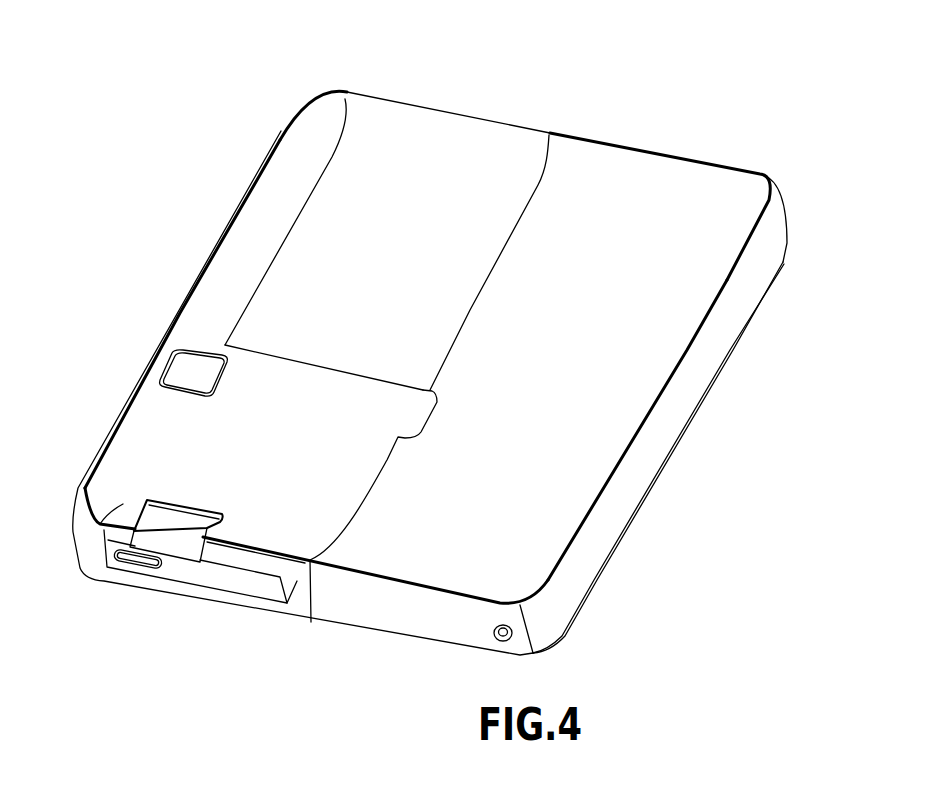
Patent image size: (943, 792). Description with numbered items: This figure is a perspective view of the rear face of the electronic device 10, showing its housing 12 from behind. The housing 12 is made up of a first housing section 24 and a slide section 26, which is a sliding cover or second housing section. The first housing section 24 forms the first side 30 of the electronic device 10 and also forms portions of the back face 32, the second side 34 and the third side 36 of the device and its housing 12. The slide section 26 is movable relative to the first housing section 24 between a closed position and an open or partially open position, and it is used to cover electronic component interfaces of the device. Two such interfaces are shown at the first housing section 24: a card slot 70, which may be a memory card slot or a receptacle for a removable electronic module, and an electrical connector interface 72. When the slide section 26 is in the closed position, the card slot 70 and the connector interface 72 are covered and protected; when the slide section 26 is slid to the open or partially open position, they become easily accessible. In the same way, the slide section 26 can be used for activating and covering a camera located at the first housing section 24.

The electronic device 10 is at (249, 33).
The housing 12 is at (268, 151).
The first housing section 24 is at (330, 97).
The slide section 26 is at (775, 212).
The first side 30 is at (105, 431).
The back face 32 is at (541, 158).
The second side 34 is at (349, 623).
The third side 36 is at (627, 533).
The card slot 70 is at (187, 512).
The electrical connector interface 72 is at (102, 582).